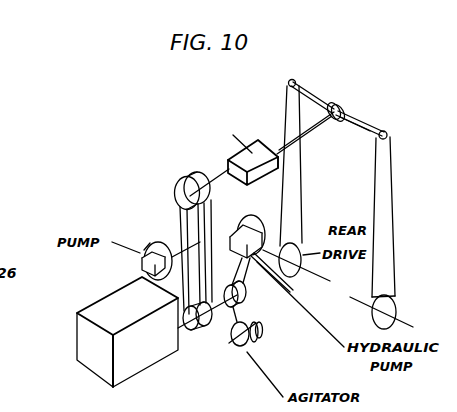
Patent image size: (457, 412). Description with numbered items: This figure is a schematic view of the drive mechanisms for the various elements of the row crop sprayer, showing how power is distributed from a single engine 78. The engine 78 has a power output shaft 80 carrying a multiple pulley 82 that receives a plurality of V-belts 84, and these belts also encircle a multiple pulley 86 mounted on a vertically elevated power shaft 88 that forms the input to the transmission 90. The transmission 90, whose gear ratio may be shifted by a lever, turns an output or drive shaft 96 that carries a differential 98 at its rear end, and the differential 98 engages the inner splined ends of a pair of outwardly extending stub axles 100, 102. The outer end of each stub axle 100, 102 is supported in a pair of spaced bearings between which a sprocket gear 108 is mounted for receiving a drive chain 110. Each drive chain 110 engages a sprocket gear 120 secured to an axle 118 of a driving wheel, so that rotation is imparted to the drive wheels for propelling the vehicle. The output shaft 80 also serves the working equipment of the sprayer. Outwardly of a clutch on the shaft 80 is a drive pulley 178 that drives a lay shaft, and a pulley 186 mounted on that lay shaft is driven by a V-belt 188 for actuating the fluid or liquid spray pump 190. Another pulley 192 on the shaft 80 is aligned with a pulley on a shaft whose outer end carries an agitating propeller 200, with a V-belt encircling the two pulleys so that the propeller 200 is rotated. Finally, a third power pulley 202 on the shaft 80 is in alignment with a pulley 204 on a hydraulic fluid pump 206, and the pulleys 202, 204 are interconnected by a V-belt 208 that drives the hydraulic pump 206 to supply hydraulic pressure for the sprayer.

The engine 78 is at (85, 355).
The power output shaft 80 is at (187, 331).
The multiple pulley 82 is at (206, 327).
The V-belts 84 is at (215, 221).
The multiple pulley 86 is at (183, 177).
The power shaft 88 is at (219, 176).
The transmission 90 is at (257, 178).
The drive shaft 96 is at (313, 128).
The differential 98 is at (342, 104).
The stub axle 100 is at (367, 123).
The stub axle 102 is at (308, 92).
The sprocket gear 108 is at (386, 129).
The drive chain 110 is at (392, 204).
The axle 118 is at (407, 323).
The sprocket gear 120 is at (398, 298).
The drive pulley 178 is at (231, 314).
The pulley 186 is at (145, 242).
The V-belt 188 is at (171, 237).
The spray pump 190 is at (150, 253).
The pulley 192 is at (262, 321).
The agitating propeller 200 is at (246, 349).
The third power pulley 202 is at (242, 298).
The pulley 204 is at (270, 215).
The hydraulic fluid pump 206 is at (255, 232).
The V-belt 208 is at (288, 278).